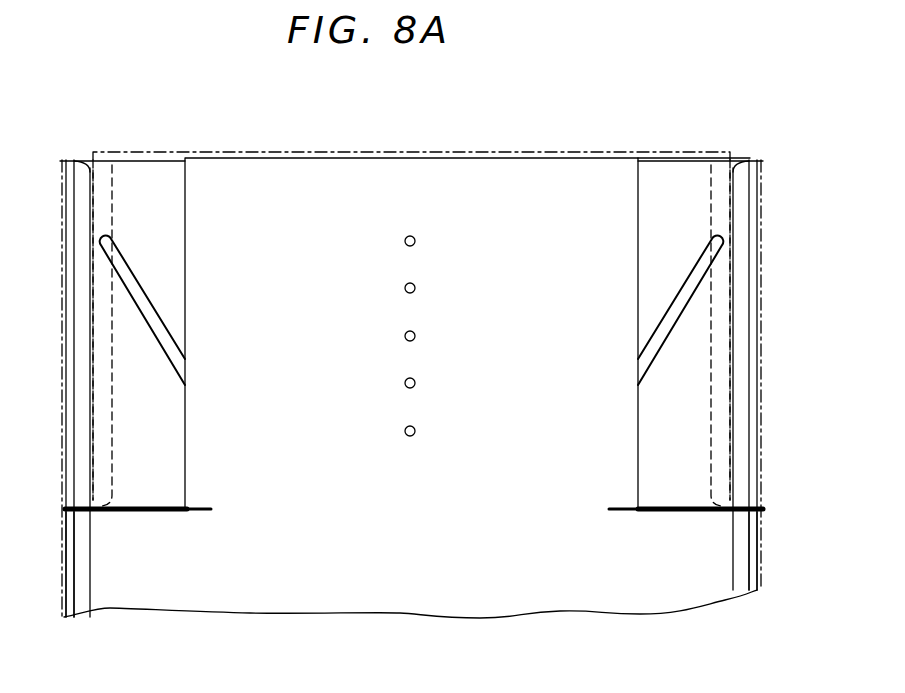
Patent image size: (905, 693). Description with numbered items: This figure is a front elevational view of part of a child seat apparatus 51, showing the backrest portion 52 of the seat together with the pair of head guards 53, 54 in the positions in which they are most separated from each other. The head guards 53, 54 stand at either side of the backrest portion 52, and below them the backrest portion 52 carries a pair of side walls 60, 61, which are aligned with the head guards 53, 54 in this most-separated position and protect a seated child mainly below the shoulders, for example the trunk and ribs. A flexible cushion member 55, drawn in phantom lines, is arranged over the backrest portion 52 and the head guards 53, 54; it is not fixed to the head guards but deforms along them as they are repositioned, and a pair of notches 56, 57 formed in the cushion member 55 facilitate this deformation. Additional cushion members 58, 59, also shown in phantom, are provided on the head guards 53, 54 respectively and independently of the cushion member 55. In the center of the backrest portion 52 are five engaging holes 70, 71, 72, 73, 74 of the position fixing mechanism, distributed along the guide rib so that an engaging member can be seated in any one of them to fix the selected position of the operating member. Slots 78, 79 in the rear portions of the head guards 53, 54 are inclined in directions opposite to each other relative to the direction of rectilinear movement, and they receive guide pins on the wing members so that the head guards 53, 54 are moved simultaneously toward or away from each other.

The child seat apparatus 51 is at (291, 126).
The backrest portion 52 is at (499, 617).
The head guard 53 is at (65, 332).
The head guard 54 is at (759, 348).
The cushion member 55 is at (712, 158).
The notch 56 is at (202, 508).
The notch 57 is at (614, 504).
The additional cushion member 58 is at (91, 200).
The additional cushion member 59 is at (730, 195).
The side wall 60 is at (65, 582).
The side wall 61 is at (761, 562).
The engaging hole 70 is at (415, 431).
The engaging hole 71 is at (415, 383).
The engaging hole 72 is at (415, 336).
The engaging hole 73 is at (415, 288).
The engaging hole 74 is at (415, 241).
The slot 78 is at (158, 308).
The slot 79 is at (665, 310).